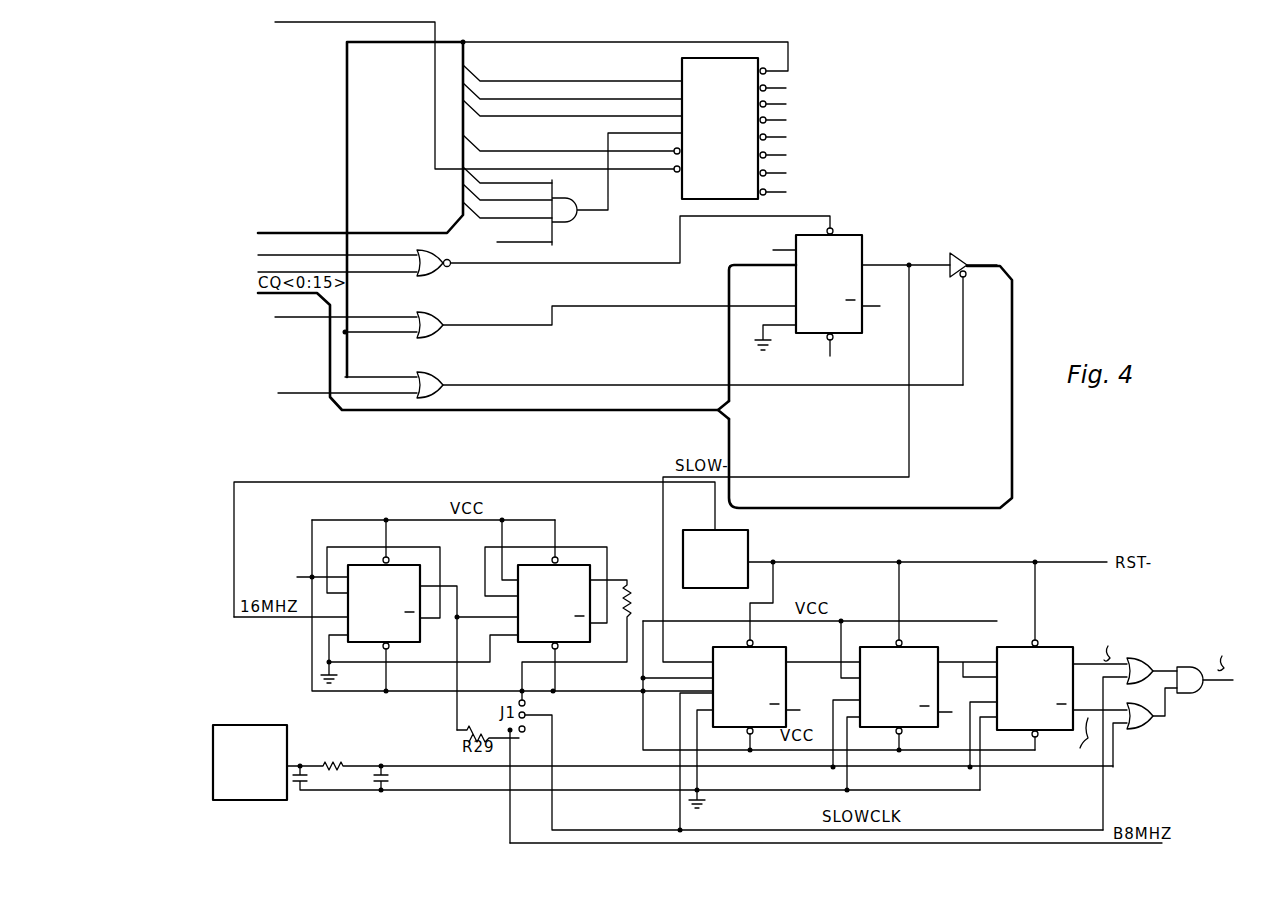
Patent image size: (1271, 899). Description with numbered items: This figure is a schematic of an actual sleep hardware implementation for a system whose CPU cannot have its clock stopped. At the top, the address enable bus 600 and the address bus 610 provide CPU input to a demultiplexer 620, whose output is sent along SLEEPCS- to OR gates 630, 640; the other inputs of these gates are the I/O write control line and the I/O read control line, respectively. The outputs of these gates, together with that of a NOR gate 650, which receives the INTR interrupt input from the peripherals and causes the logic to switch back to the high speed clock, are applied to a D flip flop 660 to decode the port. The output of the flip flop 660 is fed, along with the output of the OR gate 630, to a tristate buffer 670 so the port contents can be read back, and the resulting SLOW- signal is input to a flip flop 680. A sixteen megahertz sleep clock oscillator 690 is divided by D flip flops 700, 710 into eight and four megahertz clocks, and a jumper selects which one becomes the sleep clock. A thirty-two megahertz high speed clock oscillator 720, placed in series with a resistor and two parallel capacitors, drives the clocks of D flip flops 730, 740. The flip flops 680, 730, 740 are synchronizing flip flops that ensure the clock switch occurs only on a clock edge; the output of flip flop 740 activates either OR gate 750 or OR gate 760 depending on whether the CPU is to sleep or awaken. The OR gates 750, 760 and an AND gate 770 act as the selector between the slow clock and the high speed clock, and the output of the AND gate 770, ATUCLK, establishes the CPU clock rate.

The address enable bus 600 is at (322, 37).
The address bus 610 is at (404, 228).
The demultiplexer 620 is at (735, 53).
The OR gate 630 is at (432, 338).
The OR gate 640 is at (452, 377).
The NOR gate 650 is at (447, 274).
The D flip flop 660 is at (874, 239).
The tristate buffer 670 is at (970, 252).
The D flip flop 680 is at (739, 637).
The sleep clock oscillator 690 is at (762, 558).
The D flip flop 700 is at (375, 555).
The D flip flop 710 is at (611, 563).
The high speed clock oscillator 720 is at (275, 713).
The D flip flop 730 is at (947, 641).
The D flip flop 740 is at (1067, 641).
The OR gate 750 is at (1140, 740).
The OR gate 760 is at (1164, 653).
The AND gate 770 is at (1180, 690).